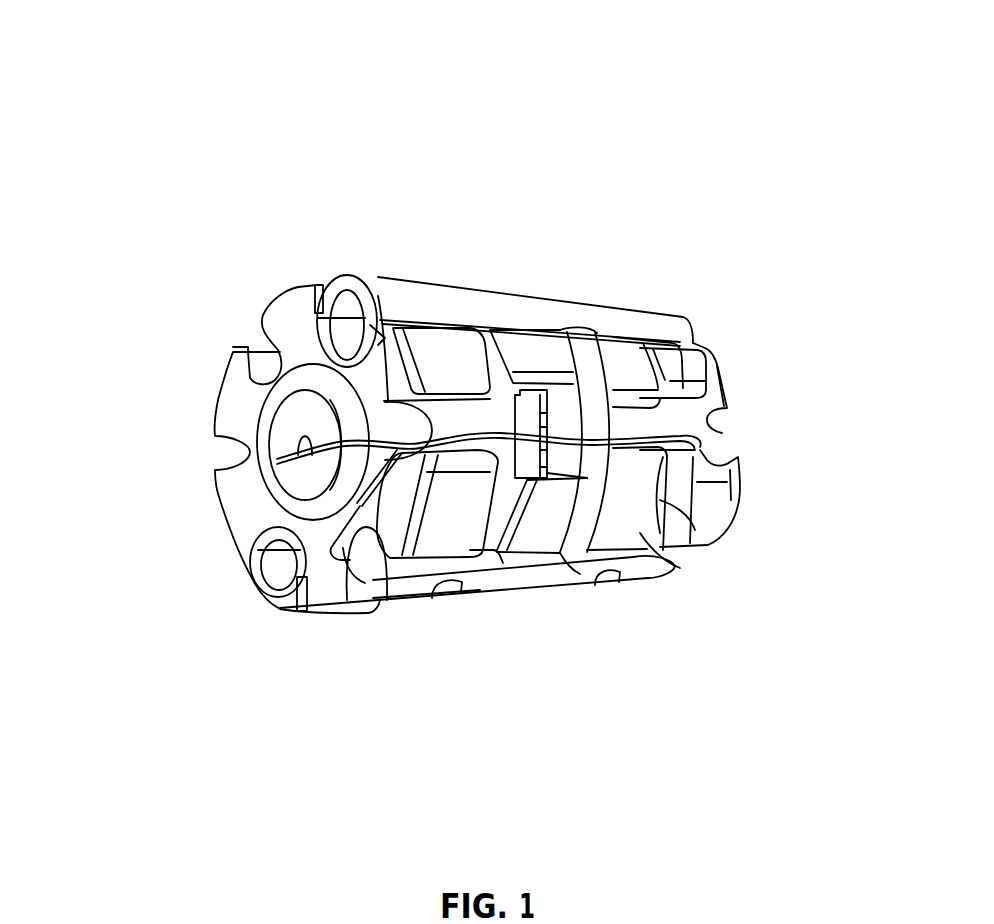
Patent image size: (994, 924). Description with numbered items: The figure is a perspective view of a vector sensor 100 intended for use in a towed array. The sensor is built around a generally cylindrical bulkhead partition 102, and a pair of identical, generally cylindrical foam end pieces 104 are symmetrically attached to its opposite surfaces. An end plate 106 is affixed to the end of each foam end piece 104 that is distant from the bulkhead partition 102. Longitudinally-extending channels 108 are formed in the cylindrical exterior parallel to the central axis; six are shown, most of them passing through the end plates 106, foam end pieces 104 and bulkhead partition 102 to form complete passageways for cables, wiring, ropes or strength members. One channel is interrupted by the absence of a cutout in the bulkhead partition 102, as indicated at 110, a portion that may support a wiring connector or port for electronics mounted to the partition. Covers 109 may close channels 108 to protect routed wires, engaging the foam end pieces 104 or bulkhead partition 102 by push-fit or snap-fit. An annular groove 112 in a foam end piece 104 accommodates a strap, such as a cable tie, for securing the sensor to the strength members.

The vector sensor 100 is at (514, 100).
The bulkhead partition 102 is at (567, 340).
The foam end pieces 104 is at (395, 575).
The end plates 106 is at (240, 493).
The longitudinally-extending channels 108 is at (335, 303).
The covers 109 is at (430, 292).
The interrupted channel portion 110 is at (620, 460).
The annular groove 112 is at (432, 583).